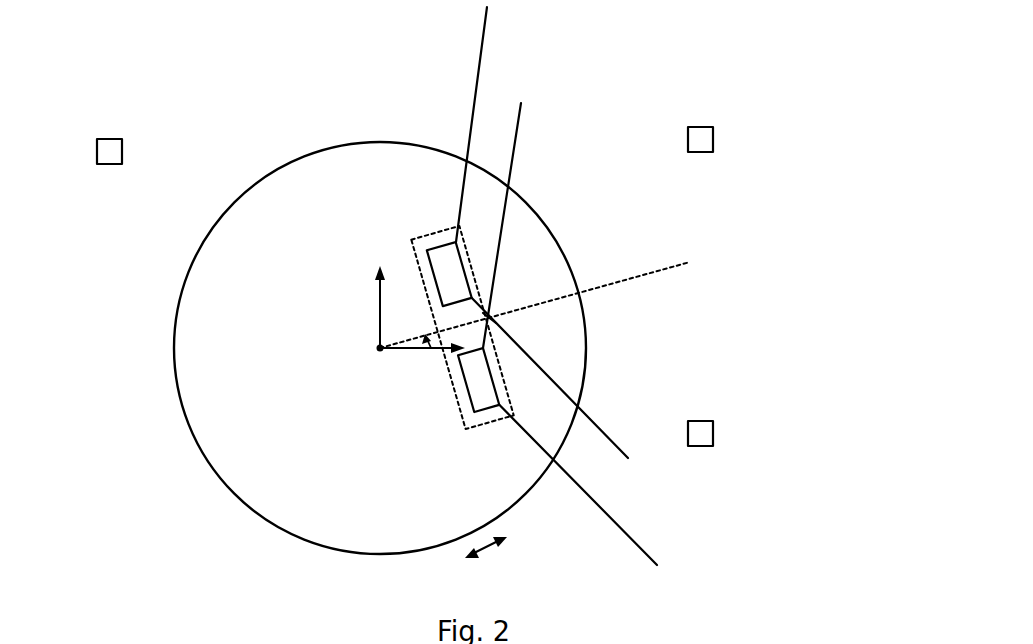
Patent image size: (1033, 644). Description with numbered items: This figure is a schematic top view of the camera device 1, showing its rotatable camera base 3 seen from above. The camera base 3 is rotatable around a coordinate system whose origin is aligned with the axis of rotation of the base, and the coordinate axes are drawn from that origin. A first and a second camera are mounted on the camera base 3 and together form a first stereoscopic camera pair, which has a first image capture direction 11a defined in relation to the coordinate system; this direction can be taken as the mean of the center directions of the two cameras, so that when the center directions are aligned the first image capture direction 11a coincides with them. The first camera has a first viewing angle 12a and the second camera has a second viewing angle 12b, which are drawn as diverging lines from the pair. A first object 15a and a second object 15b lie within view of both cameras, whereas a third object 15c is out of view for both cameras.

The camera device 1 is at (592, 84).
The camera base 3 is at (365, 143).
The first image capture direction 11a is at (433, 340).
The first viewing angle 12a is at (460, 103).
The second viewing angle 12b is at (603, 517).
The first object 15a is at (713, 142).
The second object 15b is at (713, 436).
The third object 15c is at (123, 152).